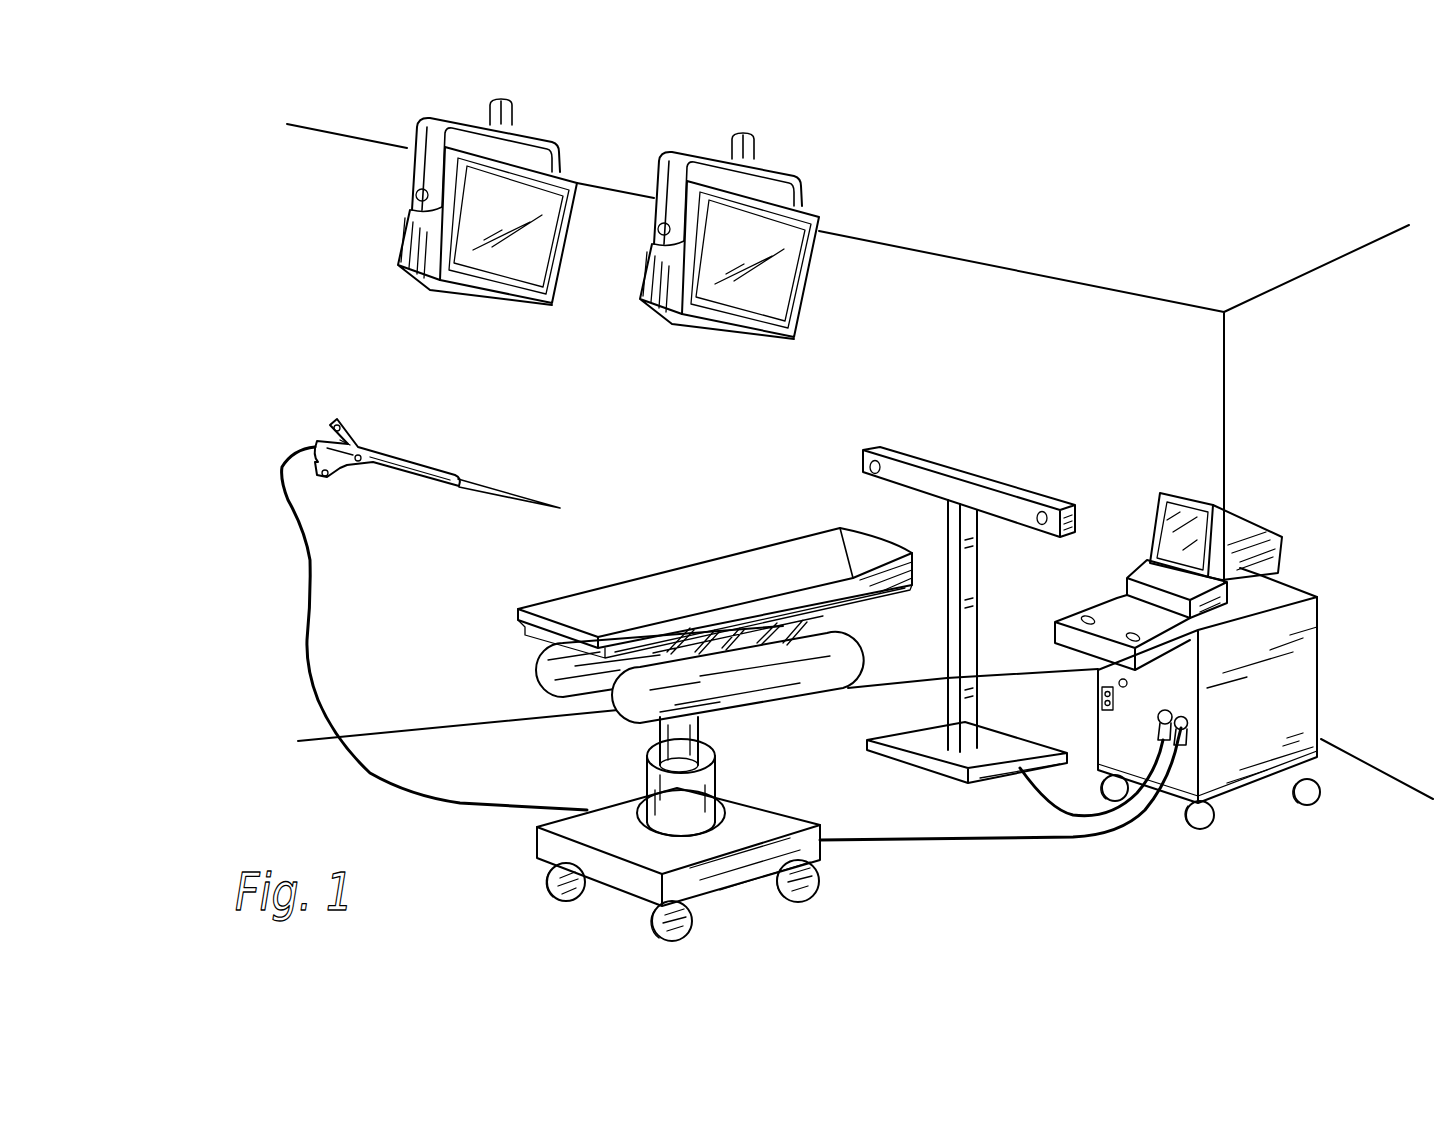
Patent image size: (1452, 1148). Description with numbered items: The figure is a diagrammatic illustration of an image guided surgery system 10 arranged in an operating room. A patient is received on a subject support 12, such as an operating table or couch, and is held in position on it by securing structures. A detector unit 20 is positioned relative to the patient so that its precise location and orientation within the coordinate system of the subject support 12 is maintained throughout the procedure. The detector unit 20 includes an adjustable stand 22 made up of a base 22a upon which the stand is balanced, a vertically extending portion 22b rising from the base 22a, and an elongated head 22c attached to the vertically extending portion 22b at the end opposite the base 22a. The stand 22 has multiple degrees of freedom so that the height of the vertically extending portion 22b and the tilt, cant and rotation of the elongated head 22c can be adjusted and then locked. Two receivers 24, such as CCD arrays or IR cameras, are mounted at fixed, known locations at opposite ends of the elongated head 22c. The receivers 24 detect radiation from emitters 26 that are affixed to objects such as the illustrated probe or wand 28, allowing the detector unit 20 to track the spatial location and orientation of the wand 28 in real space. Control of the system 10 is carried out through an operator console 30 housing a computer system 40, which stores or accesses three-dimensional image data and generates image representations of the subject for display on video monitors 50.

The image guided surgery system 10 is at (306, 792).
The subject support 12 is at (730, 570).
The detector unit 20 is at (944, 609).
The adjustable stand 22 is at (944, 615).
The base 22a is at (935, 748).
The vertically extending portion 22b is at (948, 543).
The elongated head 22c is at (944, 501).
The receivers 24 is at (872, 463).
The emitters 26 is at (340, 427).
The probe or wand 28 is at (731, 607).
The operator console 30 is at (1090, 618).
The computer system 40 is at (1295, 693).
The video monitors 50 is at (497, 262).